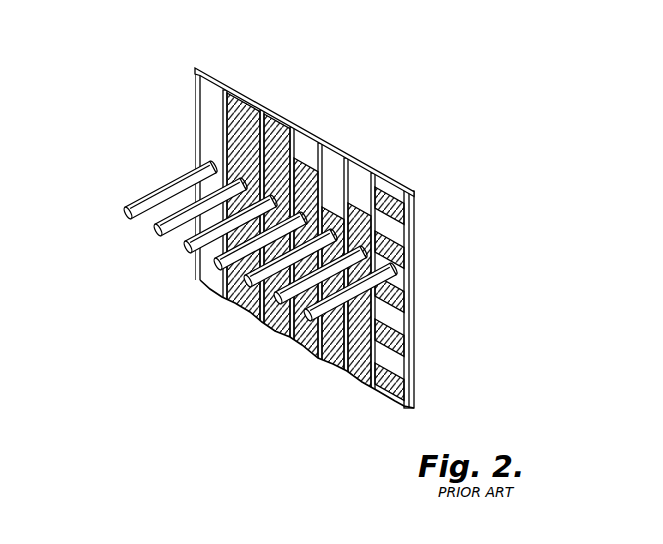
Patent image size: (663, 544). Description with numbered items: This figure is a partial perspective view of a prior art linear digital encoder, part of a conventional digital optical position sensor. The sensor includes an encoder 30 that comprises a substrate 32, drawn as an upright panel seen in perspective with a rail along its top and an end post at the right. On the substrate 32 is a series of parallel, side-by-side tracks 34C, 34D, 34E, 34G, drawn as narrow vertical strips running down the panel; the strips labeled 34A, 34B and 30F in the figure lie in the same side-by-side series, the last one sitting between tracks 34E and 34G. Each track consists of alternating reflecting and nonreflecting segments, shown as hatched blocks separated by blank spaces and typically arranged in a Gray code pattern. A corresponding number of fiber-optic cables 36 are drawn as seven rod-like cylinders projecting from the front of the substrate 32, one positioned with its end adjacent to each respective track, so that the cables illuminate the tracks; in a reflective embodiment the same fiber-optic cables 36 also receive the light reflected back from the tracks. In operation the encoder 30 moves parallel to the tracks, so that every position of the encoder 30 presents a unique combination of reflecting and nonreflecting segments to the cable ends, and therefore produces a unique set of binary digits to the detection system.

The encoder 30 is at (190, 112).
The substrate 32 is at (415, 290).
The stud 34A is at (208, 88).
The stud 34B is at (242, 93).
The track 34C is at (278, 114).
The track 34D is at (305, 140).
The track 34E is at (337, 158).
The stud 30F is at (363, 175).
The track 34G is at (392, 190).
The fiber-optic cables 36 is at (297, 358).